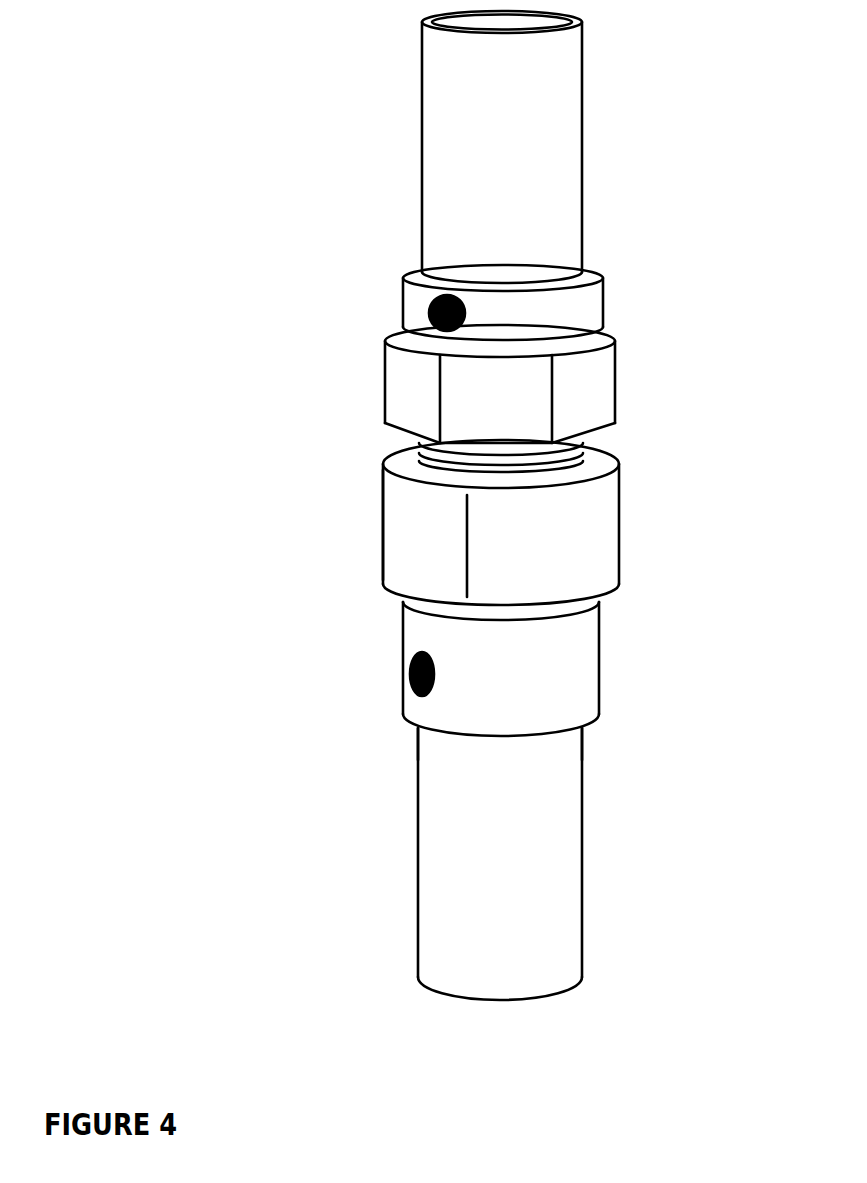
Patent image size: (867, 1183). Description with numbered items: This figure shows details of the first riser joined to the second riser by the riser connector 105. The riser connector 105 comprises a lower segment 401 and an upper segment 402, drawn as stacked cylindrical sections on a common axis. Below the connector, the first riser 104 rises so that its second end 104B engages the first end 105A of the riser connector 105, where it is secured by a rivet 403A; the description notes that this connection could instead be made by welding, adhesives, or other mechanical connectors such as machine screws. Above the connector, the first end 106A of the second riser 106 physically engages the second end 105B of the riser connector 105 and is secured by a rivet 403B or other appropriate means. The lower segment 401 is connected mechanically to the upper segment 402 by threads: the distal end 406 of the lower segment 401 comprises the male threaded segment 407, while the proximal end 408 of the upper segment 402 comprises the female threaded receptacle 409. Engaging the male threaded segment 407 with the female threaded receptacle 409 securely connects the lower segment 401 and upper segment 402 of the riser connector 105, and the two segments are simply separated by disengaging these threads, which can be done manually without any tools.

The first riser 104 is at (582, 900).
The second end of the first riser 104B is at (583, 723).
The riser connector 105 is at (272, 520).
The first end of the riser connector 105A is at (583, 723).
The second end of the riser connector 105B is at (592, 268).
The second riser 106 is at (440, 144).
The first end of the second riser 106A is at (512, 280).
The lower segment 401 is at (373, 477).
The upper segment 402 is at (627, 352).
The rivet 403A is at (410, 672).
The rivet 403B is at (430, 312).
The distal end of the lower segment 406 is at (605, 452).
The male threaded segment 407 is at (605, 440).
The proximal end of the upper segment 408 is at (392, 432).
The female threaded receptacle 409 is at (605, 431).